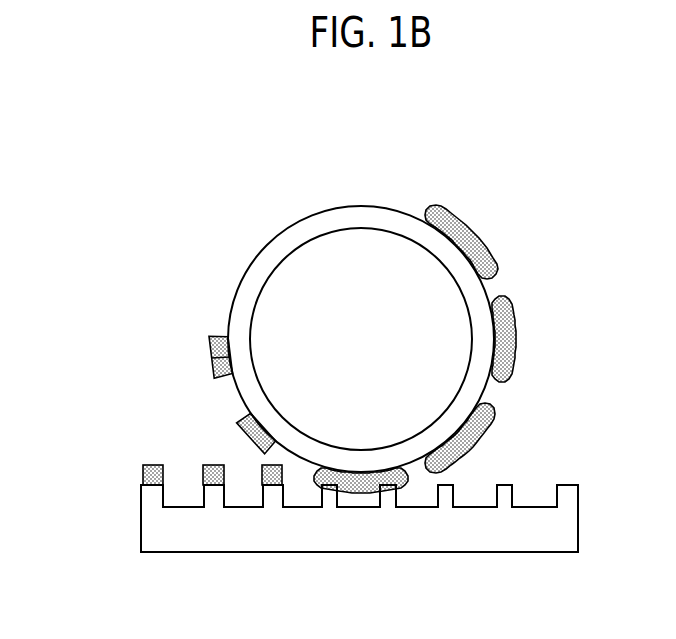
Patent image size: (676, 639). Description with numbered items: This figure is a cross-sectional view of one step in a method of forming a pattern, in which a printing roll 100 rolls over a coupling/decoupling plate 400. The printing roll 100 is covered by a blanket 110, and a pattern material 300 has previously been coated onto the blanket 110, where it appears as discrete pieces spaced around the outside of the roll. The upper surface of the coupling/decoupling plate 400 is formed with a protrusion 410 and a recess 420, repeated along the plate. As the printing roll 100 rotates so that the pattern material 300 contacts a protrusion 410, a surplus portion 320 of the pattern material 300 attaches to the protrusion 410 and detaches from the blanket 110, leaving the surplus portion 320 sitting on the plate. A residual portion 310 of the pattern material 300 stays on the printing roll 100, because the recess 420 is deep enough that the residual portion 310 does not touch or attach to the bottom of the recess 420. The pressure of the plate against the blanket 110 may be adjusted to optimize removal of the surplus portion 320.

The printing roll 100 is at (300, 283).
The blanket 110 is at (343, 218).
The pattern material 300 is at (465, 237).
The residual portion 310 is at (210, 358).
The surplus portion 320 is at (153, 472).
The coupling/decoupling plate 400 is at (278, 536).
The protrusion 410 is at (146, 497).
The recess 420 is at (188, 497).